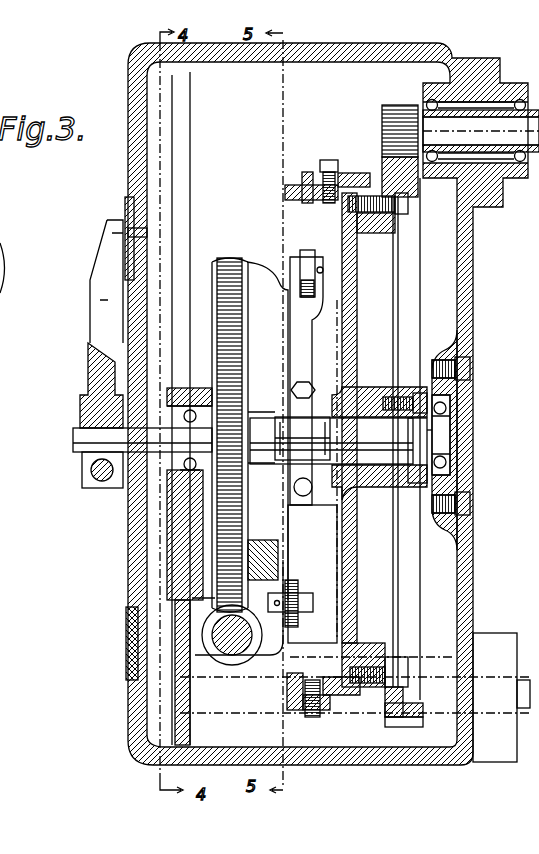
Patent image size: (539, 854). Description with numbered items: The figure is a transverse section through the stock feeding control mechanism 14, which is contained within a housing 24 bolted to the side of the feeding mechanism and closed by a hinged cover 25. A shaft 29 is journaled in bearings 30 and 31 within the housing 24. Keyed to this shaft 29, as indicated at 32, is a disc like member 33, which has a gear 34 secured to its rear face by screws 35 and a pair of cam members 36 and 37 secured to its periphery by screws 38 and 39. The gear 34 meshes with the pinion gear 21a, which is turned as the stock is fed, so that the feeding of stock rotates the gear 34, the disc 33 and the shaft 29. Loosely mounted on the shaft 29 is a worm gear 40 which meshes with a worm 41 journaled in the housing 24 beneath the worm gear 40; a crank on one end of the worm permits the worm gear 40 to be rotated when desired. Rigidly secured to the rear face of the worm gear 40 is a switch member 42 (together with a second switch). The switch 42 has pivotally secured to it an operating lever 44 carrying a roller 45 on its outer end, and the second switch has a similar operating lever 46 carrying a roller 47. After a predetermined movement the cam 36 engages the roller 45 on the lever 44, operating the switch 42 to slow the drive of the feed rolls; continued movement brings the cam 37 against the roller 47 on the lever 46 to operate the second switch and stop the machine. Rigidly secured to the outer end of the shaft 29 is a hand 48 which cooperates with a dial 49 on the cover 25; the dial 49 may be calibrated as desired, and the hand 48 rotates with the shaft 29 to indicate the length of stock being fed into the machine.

The control mechanism 14 is at (121, 74).
The pinion gear 21a is at (387, 108).
The housing 24 is at (466, 307).
The hinged cover 25 is at (130, 572).
The shaft 29 is at (341, 450).
The bearing 30 is at (448, 415).
The bearing 31 is at (185, 388).
The key 32 is at (383, 470).
The disc like member 33 is at (357, 307).
The gear 34 is at (383, 166).
The screws 35 is at (401, 214).
The cam member 36 is at (302, 178).
The cam member 37 is at (286, 716).
The screw 38 is at (325, 160).
The screw 39 is at (322, 718).
The worm gear 40 is at (228, 258).
The worm 41 is at (248, 652).
The switch member 42 is at (314, 529).
The operating lever 44 is at (298, 348).
The roller 45 is at (310, 250).
The operating lever 46 is at (318, 558).
The roller 47 is at (296, 593).
The hand 48 is at (90, 330).
The dial 49 is at (130, 655).